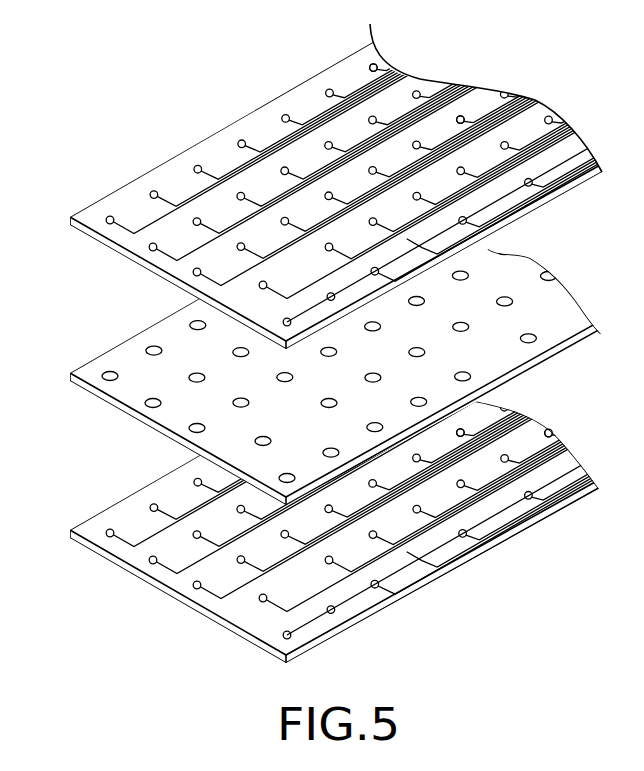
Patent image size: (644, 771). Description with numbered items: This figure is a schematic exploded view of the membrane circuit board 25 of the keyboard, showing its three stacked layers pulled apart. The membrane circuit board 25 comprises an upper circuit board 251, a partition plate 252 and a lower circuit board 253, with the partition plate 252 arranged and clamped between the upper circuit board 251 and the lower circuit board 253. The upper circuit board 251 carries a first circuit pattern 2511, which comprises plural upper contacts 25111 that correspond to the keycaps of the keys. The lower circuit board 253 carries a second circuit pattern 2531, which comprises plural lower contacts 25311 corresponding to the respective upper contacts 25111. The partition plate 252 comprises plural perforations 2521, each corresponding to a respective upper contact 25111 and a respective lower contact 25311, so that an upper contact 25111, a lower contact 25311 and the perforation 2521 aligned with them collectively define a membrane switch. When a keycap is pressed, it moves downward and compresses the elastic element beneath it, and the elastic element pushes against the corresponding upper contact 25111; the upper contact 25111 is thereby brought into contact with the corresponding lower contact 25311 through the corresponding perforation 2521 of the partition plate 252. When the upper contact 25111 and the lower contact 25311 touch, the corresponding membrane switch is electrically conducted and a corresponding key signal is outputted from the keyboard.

The membrane circuit board 25 is at (329, 331).
The upper circuit board 251 is at (329, 174).
The first circuit pattern 2511 is at (175, 182).
The upper contacts 25111 is at (376, 64).
The partition plate 252 is at (329, 324).
The perforations 2521 is at (506, 294).
The lower circuit board 253 is at (329, 361).
The second circuit pattern 2531 is at (489, 527).
The lower contacts 25311 is at (461, 428).